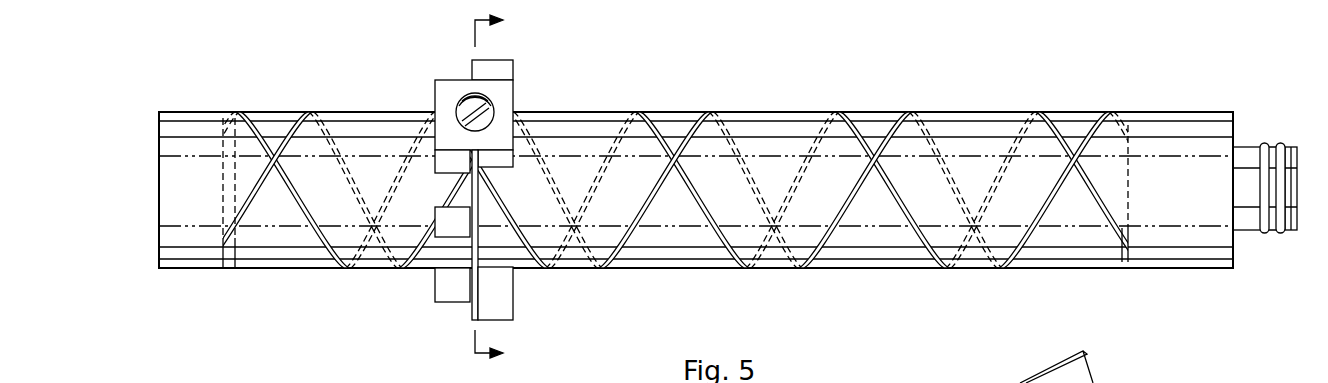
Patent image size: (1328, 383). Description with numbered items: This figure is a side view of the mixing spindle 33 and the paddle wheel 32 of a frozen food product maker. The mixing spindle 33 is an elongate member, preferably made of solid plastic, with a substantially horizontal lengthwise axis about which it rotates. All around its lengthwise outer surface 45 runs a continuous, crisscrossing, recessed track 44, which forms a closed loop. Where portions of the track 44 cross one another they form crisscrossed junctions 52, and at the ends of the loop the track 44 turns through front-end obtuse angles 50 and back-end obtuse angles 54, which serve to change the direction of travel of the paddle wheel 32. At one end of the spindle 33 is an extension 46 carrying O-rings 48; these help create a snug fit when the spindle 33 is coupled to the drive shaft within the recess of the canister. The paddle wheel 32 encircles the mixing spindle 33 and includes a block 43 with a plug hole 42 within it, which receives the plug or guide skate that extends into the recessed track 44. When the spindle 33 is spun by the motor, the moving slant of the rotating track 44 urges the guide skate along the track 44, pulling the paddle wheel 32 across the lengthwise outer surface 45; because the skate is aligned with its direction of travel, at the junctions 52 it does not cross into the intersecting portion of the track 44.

The paddle wheel 32 is at (491, 186).
The mixing spindle 33 is at (674, 193).
The plug hole 42 is at (462, 98).
The block 43 is at (453, 80).
The recessed track 44 is at (694, 147).
The lengthwise outer surface 45 is at (812, 110).
The extension 46 is at (1243, 147).
The O-rings 48 is at (1265, 143).
The front-end obtuse angles 50 is at (222, 238).
The crisscrossed junctions 52 is at (866, 157).
The back-end obtuse angles 54 is at (1130, 240).